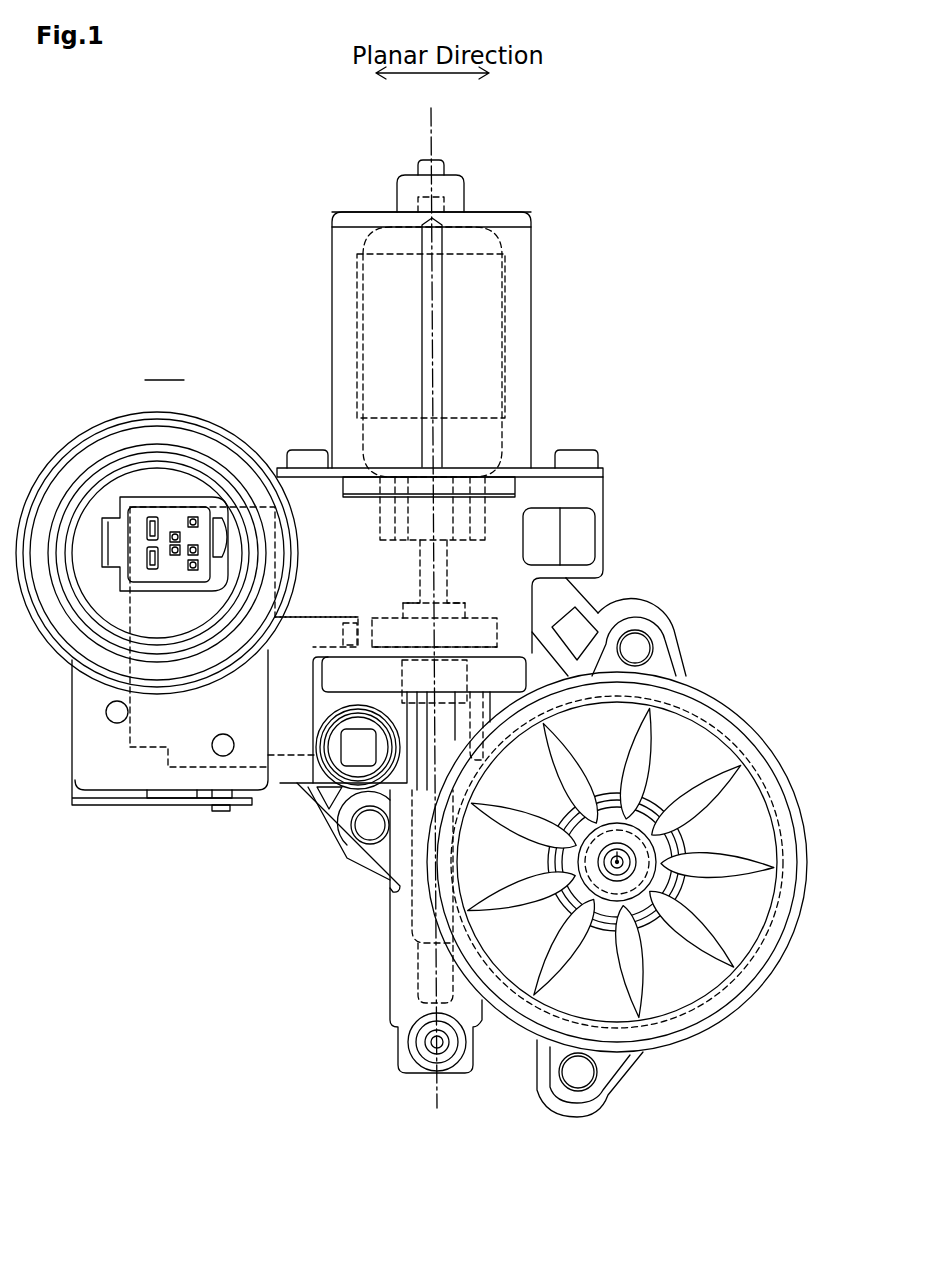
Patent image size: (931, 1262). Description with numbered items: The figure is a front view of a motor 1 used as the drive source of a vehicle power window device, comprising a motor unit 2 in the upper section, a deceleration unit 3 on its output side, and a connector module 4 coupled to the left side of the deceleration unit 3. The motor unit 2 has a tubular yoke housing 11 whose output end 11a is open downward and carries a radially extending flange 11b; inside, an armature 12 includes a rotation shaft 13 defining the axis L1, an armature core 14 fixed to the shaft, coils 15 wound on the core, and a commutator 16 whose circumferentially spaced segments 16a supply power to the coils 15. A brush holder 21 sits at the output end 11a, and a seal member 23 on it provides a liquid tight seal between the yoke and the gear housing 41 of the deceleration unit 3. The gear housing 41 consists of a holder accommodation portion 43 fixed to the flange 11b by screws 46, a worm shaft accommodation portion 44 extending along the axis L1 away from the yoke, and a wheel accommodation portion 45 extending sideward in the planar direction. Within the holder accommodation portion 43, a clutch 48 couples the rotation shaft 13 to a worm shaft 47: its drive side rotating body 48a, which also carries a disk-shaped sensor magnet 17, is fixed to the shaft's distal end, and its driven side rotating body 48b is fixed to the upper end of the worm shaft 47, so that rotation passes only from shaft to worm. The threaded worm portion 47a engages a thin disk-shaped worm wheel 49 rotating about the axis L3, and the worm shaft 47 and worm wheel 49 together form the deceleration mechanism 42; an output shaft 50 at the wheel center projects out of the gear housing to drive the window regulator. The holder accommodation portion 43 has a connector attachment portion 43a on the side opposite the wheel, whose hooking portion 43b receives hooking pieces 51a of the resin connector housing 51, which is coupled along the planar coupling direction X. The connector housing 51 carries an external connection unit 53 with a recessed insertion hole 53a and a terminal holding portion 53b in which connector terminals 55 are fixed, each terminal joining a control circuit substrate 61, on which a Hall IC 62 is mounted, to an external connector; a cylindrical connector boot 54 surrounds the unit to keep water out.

The motor 1 is at (559, 189).
The motor unit 2 is at (352, 200).
The deceleration unit 3 is at (719, 692).
The connector module 4 is at (78, 420).
The yoke housing 11 is at (528, 272).
The output end 11a is at (540, 468).
The flange 11b is at (603, 476).
The armature 12 is at (505, 312).
The rotation shaft 13 is at (467, 596).
The armature core 14 is at (357, 265).
The coils 15 is at (488, 212).
The commutator 16 is at (380, 520).
The segments 16a is at (455, 547).
The sensor magnet 17 is at (375, 616).
The brush holder 21 is at (549, 615).
The seal member 23 is at (512, 490).
The gear housing 41 is at (605, 588).
The deceleration mechanism 42 is at (436, 931).
The holder accommodation portion 43 is at (606, 546).
The connector attachment portion 43a is at (305, 798).
The hooking portion 43b is at (222, 812).
The worm shaft accommodation portion 44 is at (395, 1008).
The wheel accommodation portion 45 is at (722, 1000).
The screws 46 is at (307, 450).
The worm shaft 47 is at (416, 963).
The worm portion 47a is at (410, 905).
The clutch 48 is at (392, 680).
The drive side rotating body 48a is at (418, 605).
The driven side rotating body 48b is at (478, 758).
The worm wheel 49 is at (688, 1030).
The output shaft 50 is at (612, 898).
The connector housing 51 is at (95, 806).
The hooking piece 51a is at (165, 800).
The external connection unit 53 is at (197, 591).
The insertion hole 53a is at (180, 576).
The terminal holding portion 53b is at (112, 540).
The connector boot 54 is at (38, 642).
The connector terminals 55 is at (194, 518).
The control circuit substrate 61 is at (318, 613).
The Hall IC 62 is at (342, 633).
The axis L1 is at (437, 128).
The rotation axis L3 is at (617, 852).
The coupling direction X is at (175, 385).